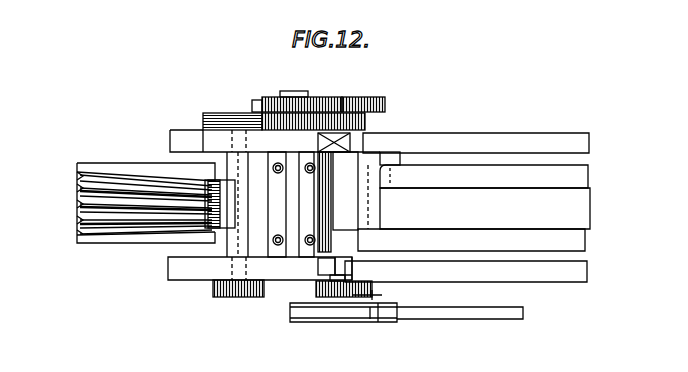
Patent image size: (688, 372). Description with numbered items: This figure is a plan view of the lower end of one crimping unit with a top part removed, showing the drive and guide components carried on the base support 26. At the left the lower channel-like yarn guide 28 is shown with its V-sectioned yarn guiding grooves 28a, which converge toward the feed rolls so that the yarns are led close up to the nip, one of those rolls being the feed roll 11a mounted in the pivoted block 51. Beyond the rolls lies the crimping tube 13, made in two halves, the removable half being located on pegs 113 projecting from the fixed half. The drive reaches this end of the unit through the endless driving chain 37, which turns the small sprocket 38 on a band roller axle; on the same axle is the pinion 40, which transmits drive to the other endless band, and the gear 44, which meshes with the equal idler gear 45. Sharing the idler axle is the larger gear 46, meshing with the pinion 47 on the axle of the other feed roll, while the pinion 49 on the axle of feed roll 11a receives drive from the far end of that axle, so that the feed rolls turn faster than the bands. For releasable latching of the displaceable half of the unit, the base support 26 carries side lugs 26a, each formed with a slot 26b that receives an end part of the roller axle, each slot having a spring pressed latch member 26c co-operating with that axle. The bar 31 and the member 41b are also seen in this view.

The feed roll 11a is at (235, 223).
The crimping tube 13 is at (336, 100).
The base support 26 is at (498, 133).
The side lug 26a is at (350, 148).
The slot 26b is at (350, 135).
The spring pressed latch member 26c is at (362, 100).
The lower yarn guide 28 is at (152, 167).
The yarn guiding grooves 28a is at (80, 228).
The bar 31 is at (525, 180).
The endless driving chain 37 is at (485, 316).
The small sprocket 38 is at (375, 320).
The pinion 40 is at (363, 295).
The slide bar 41b is at (557, 208).
The gear 44 is at (385, 108).
The idler gear 45 is at (252, 100).
The larger gear 46 is at (250, 112).
The pinion 47 is at (223, 113).
The pinion 49 is at (238, 297).
The block 51 is at (309, 96).
The pegs 113 is at (303, 245).